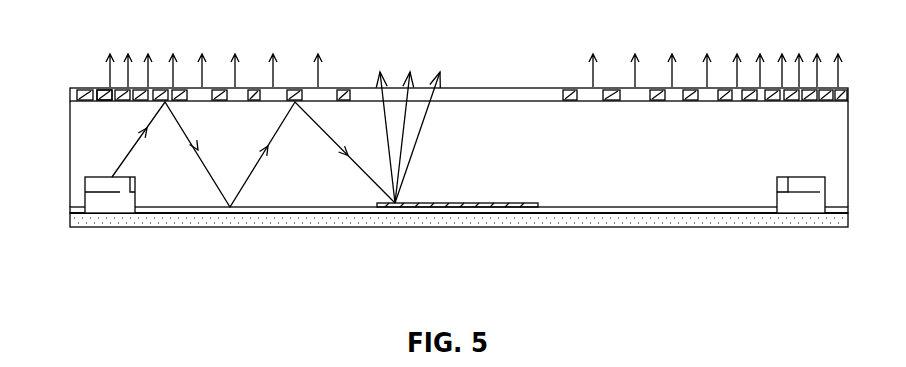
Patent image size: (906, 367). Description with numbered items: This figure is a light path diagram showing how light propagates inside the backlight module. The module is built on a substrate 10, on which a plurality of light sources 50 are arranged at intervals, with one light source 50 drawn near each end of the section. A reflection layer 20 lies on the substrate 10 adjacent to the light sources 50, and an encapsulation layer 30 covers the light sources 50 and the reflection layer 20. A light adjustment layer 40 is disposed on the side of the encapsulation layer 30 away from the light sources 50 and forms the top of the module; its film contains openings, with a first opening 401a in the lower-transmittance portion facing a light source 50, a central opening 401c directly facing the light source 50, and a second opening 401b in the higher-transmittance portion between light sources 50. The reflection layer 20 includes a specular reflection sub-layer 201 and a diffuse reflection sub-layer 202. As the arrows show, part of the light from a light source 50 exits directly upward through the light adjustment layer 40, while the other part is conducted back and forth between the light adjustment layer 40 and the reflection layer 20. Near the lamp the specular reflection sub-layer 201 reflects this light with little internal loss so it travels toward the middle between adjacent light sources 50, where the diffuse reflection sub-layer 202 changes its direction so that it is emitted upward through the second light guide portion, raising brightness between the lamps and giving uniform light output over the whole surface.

The substrate 10 is at (849, 221).
The reflection layer 20 is at (849, 208).
The specular reflection sub-layer 201 is at (578, 217).
The diffuse reflection sub-layer 202 is at (467, 207).
The encapsulation layer 30 is at (849, 157).
The light adjustment layer 40 is at (849, 89).
The first opening 401a is at (174, 91).
The second opening 401b is at (473, 97).
The central opening 401c is at (110, 90).
The light sources 50 is at (112, 197).